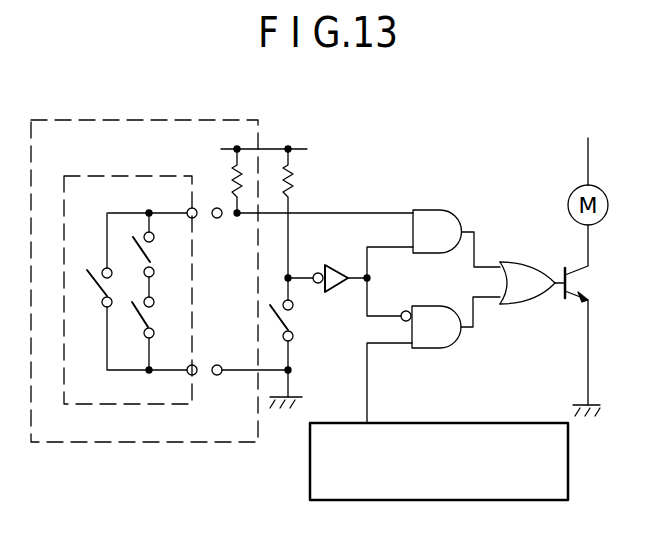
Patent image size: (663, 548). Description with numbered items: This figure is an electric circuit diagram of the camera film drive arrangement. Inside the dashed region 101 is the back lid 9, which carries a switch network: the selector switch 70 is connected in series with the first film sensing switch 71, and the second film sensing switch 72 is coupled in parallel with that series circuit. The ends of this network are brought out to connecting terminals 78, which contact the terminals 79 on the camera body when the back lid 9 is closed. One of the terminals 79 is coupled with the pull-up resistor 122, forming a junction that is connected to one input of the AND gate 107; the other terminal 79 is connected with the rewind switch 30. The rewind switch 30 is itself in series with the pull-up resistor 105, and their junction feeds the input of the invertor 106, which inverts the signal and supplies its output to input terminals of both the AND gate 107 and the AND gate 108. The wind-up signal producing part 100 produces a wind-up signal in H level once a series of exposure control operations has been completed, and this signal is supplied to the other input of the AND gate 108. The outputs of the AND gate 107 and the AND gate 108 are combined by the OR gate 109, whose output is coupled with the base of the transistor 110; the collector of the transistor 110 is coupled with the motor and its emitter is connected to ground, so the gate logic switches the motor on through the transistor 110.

The switch control circuit block 101 is at (218, 118).
The back lid 9 is at (107, 172).
The pull-up resistor 122 is at (233, 180).
The pull-up resistor 105 is at (300, 178).
The connecting terminals 78 is at (188, 207).
The terminals 79 is at (220, 218).
The selector switch 70 is at (147, 258).
The first film sensing switch 71 is at (143, 314).
The second film sensing switch 72 is at (97, 285).
The rewind switch 30 is at (281, 320).
The invertor 106 is at (331, 264).
The AND gate 107 is at (445, 210).
The AND gate 108 is at (440, 348).
The OR gate 109 is at (530, 303).
The transistor 110 is at (578, 282).
The wind-up signal producing part 100 is at (310, 478).